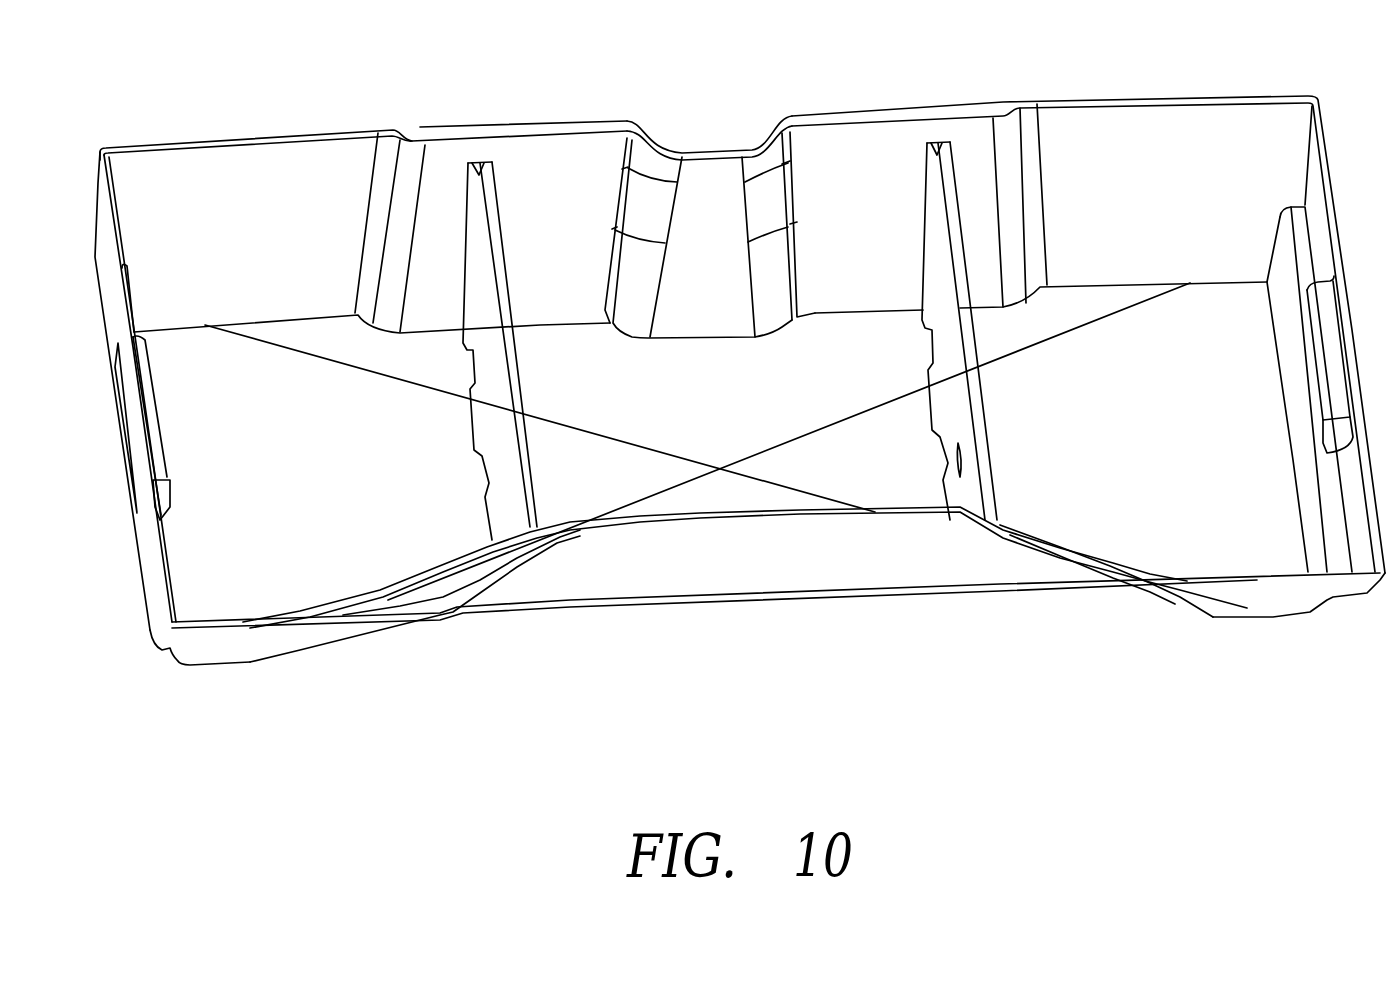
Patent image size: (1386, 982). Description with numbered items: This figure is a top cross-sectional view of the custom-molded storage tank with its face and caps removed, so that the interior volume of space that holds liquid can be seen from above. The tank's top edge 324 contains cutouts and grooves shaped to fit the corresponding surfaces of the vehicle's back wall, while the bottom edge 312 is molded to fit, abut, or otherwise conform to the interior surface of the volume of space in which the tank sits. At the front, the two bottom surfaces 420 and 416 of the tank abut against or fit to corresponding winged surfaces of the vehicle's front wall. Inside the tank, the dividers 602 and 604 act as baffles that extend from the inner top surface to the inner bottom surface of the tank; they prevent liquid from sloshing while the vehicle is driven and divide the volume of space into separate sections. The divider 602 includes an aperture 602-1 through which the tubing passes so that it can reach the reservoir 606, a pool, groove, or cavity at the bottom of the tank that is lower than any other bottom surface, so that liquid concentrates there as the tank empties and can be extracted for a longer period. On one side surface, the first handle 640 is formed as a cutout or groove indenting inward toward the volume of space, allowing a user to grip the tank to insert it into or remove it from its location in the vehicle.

The top edge 324 is at (702, 133).
The first handle 640 is at (133, 412).
The bottom surface 420 is at (247, 620).
The divider 604 is at (505, 503).
The divider 602 is at (967, 490).
The aperture 602-1 is at (960, 455).
The reservoir 606 is at (722, 480).
The bottom edge 312 is at (823, 513).
The bottom surface 416 is at (1253, 577).